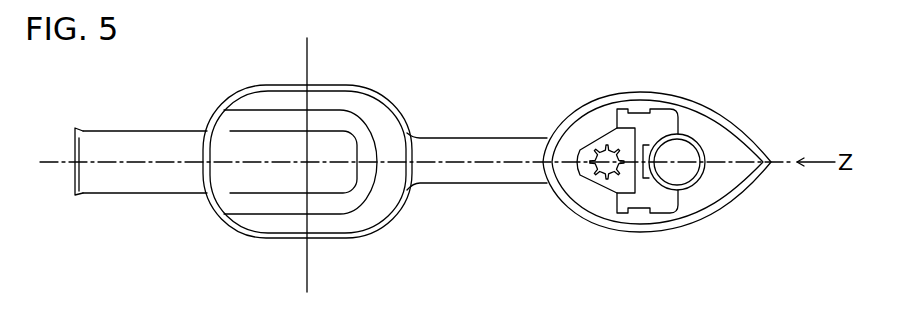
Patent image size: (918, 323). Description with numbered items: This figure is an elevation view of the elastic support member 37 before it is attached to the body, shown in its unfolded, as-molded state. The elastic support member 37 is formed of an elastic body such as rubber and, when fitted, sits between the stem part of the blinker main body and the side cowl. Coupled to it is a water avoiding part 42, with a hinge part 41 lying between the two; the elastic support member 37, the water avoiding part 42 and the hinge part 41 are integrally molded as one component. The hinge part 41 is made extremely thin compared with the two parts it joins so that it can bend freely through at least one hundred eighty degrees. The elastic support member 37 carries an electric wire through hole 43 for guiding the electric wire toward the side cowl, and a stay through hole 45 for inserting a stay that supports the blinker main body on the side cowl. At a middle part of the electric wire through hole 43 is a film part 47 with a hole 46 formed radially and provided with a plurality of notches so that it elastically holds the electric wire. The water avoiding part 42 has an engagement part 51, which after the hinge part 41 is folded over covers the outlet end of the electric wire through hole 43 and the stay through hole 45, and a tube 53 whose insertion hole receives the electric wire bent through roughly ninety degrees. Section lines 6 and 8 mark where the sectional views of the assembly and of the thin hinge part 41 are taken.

The section line 6- 6 is at (301, 47).
The section line 8- 8 is at (46, 164).
The elastic support member 37 is at (700, 120).
The hinge part 41 is at (500, 184).
The water avoiding part 42 is at (348, 222).
The electric wire through hole 43 is at (608, 182).
The stay through hole 45 is at (693, 177).
The hole 46 is at (610, 146).
The film part 47 is at (591, 152).
The engagement part 51 is at (77, 198).
The tube 53 is at (131, 194).